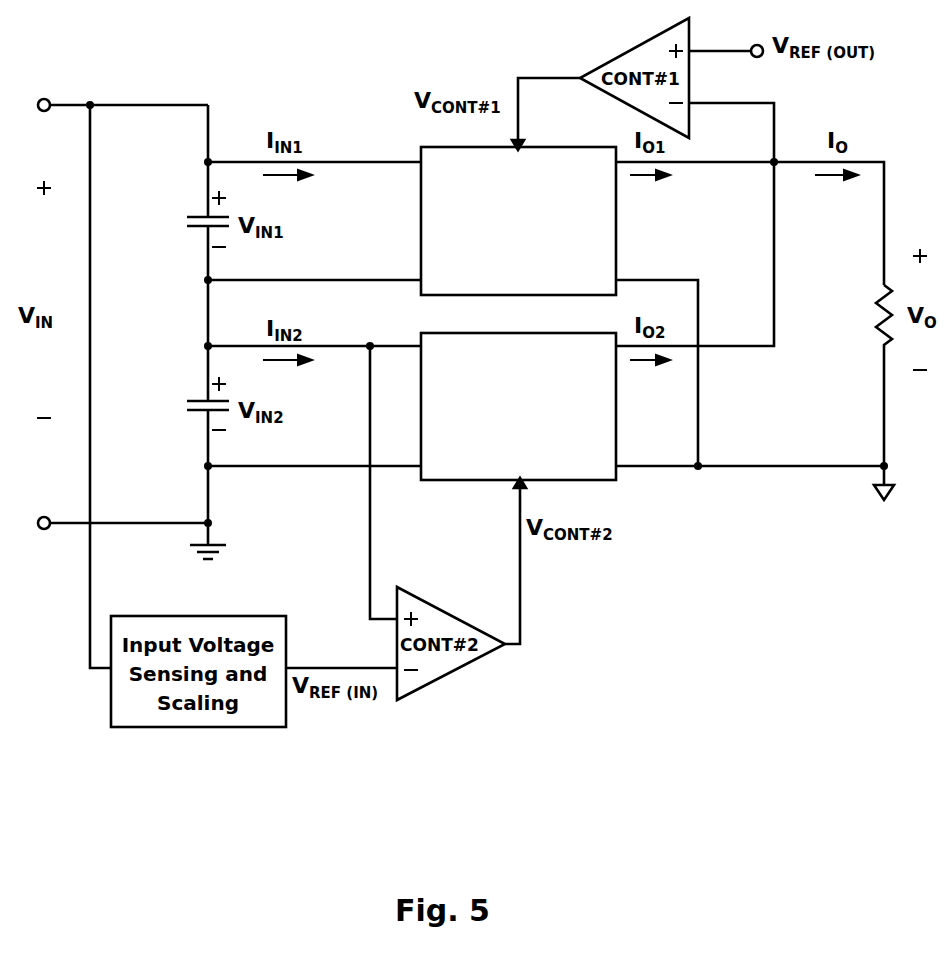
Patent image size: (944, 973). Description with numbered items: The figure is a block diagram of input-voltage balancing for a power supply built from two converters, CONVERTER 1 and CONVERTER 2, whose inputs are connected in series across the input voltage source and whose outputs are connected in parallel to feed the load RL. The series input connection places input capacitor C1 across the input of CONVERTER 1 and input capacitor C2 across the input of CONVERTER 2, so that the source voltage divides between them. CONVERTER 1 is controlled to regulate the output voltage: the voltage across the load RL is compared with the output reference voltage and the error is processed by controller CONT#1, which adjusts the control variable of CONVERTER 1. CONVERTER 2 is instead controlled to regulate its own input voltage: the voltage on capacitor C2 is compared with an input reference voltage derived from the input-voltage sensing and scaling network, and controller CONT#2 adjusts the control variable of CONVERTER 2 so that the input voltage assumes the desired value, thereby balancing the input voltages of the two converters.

The input capacitor C1 is at (188, 226).
The input capacitor C2 is at (188, 412).
The load resistor RL is at (861, 375).
The converter 1 is at (518, 221).
The converter 2 is at (518, 406).